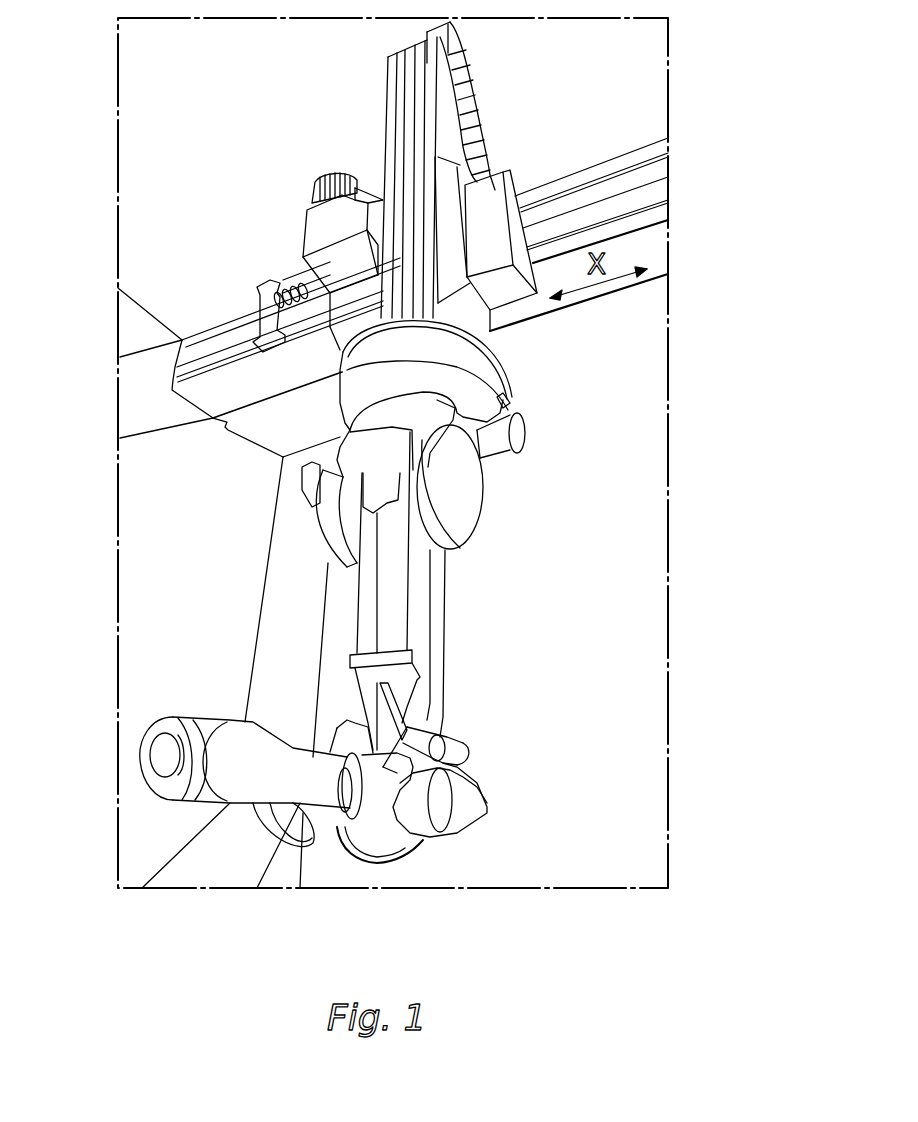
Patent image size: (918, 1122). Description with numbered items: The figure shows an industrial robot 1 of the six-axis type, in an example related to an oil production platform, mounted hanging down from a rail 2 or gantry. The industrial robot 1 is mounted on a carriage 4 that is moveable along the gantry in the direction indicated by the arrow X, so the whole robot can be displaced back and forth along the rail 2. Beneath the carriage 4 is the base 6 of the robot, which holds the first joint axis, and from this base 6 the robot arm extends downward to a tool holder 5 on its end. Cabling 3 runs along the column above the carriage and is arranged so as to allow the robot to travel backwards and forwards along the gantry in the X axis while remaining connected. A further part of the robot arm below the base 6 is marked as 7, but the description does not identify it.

The industrial robot 1 is at (566, 537).
The rail 2 is at (648, 192).
The cabling 3 is at (487, 91).
The carriage 4 is at (300, 238).
The tool holder 5 is at (158, 753).
The base 6 is at (353, 368).
The arm housing 7 is at (375, 428).